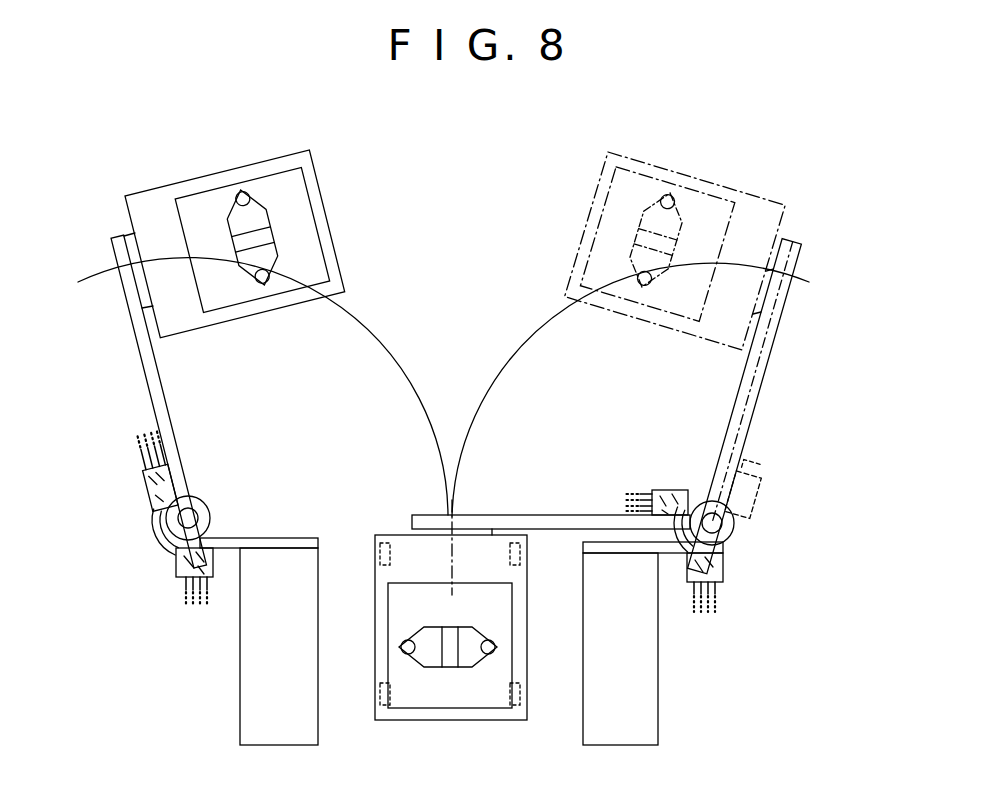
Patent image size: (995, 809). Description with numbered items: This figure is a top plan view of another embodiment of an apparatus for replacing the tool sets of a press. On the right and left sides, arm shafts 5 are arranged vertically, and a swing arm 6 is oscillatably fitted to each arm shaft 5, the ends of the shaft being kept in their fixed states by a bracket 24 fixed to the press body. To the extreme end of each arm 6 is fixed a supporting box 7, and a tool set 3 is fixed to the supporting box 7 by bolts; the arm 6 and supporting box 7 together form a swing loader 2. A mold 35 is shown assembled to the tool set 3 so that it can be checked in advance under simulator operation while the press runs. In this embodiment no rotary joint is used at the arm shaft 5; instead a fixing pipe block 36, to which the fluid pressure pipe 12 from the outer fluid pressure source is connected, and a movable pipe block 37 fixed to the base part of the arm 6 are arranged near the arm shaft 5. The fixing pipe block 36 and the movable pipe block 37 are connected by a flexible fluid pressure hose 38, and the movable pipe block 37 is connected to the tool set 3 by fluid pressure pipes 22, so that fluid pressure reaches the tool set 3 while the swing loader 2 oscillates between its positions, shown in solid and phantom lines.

The swing loader 2 is at (178, 180).
The tool set 3 is at (203, 314).
The arm shaft 5 is at (166, 518).
The swing arm 6 is at (146, 378).
The supporting box 7 is at (137, 208).
The fluid pressure pipe 12 is at (213, 588).
The fluid pressure pipes 22 is at (140, 458).
The bracket 24 is at (227, 538).
The mold 35 is at (270, 229).
The fixing pipe block 36 is at (176, 580).
The movable pipe block 37 is at (140, 483).
The flexible fluid pressure hose 38 is at (152, 538).